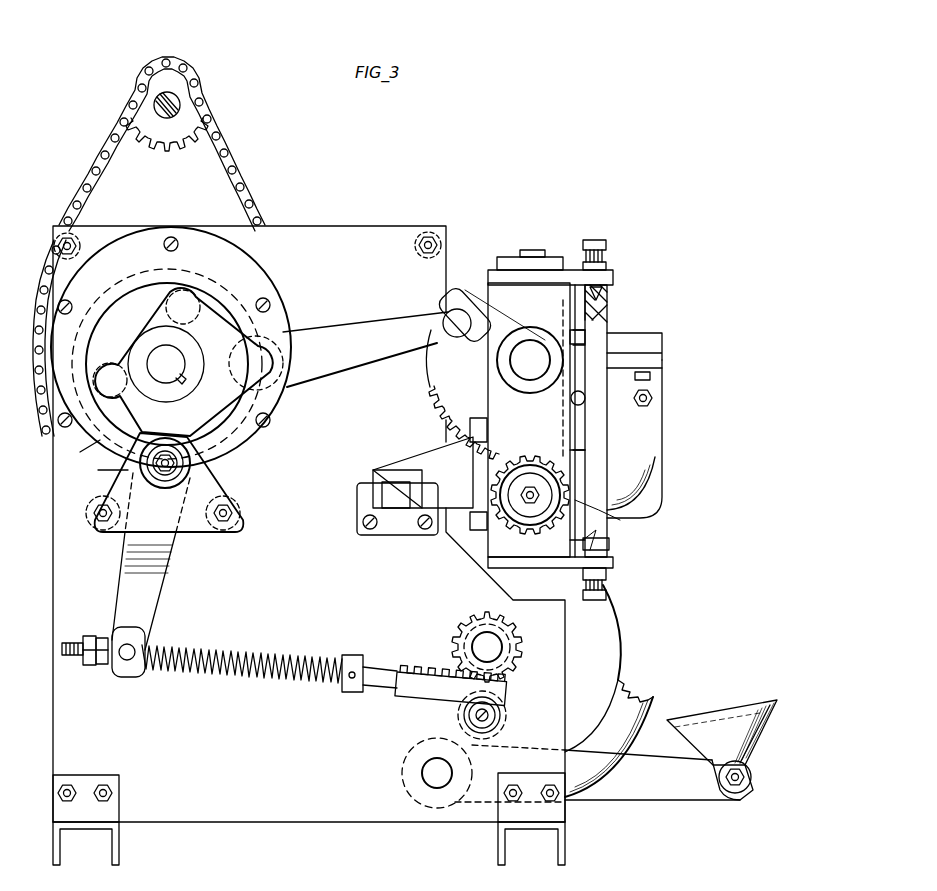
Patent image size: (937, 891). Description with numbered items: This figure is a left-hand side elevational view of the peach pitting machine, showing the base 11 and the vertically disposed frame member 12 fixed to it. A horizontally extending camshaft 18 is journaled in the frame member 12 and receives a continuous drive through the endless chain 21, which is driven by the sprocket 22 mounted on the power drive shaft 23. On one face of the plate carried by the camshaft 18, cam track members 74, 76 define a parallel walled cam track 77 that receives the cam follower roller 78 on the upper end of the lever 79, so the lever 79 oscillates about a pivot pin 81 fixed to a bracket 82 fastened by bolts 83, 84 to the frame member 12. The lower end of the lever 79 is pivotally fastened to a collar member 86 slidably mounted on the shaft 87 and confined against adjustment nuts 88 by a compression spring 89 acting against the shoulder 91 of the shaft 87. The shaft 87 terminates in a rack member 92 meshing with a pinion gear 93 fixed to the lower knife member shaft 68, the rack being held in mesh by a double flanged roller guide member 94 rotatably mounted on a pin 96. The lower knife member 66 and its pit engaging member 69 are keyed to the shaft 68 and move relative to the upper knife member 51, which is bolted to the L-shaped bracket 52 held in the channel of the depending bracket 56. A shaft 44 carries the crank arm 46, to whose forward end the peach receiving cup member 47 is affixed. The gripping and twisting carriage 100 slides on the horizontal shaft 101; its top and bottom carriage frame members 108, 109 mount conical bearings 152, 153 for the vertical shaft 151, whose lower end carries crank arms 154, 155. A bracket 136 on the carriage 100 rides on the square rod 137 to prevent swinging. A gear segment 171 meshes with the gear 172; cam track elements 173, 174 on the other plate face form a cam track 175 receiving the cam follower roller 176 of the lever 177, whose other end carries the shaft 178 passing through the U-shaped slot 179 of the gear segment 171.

The base 11 is at (115, 850).
The frame member 12 is at (372, 232).
The camshaft 18 is at (168, 368).
The endless chain 21 is at (245, 180).
The sprocket 22 is at (163, 150).
The power drive shaft 23 is at (162, 112).
The shaft 44 is at (425, 783).
The crank arm 46 is at (622, 798).
The peach receiving cup member 47 is at (755, 740).
The upper knife member 51 is at (664, 434).
The L-shaped bracket 52 is at (665, 388).
The depending bracket 56 is at (665, 355).
The lower knife member 66 is at (618, 628).
The lower knife member shaft 68 is at (485, 632).
The pit engaging member 69 is at (612, 750).
The cam track member 74 is at (262, 440).
The cam track member 76 is at (262, 388).
The cam track 77 is at (230, 448).
The cam follower roller 78 is at (100, 370).
The lever 79 is at (150, 604).
The pivot pin 81 is at (163, 482).
The bracket 82 is at (185, 528).
The bolt 83 is at (240, 516).
The bolt 84 is at (100, 532).
The collar member 86 is at (130, 672).
The shaft 87 is at (380, 690).
The adjustment nuts 88 is at (90, 668).
The compression spring 89 is at (245, 680).
The shoulder 91 is at (350, 695).
The rack member 92 is at (442, 690).
The pinion gear 93 is at (513, 655).
The double flanged roller guide member 94 is at (494, 728).
The pin 96 is at (474, 720).
The carriage 100 is at (595, 235).
The horizontal shaft 101 is at (536, 345).
The carriage frame member 108 is at (613, 276).
The carriage frame member 109 is at (613, 565).
The bracket 136 is at (432, 448).
The square rod 137 is at (395, 480).
The shaft 151 is at (608, 330).
The conical bearing 152 is at (608, 294).
The conical bearing 153 is at (608, 546).
The crank arm 154 is at (580, 448).
The crank arm 155 is at (590, 532).
The gear segment 171 is at (432, 390).
The gear 172 is at (530, 522).
The cam track element 173 is at (82, 455).
The cam track element 174 is at (100, 474).
The cam track 175 is at (80, 378).
The cam follower roller 176 is at (196, 300).
The lever 177 is at (356, 330).
The shaft 178 is at (450, 312).
The U-shaped slot 179 is at (450, 345).